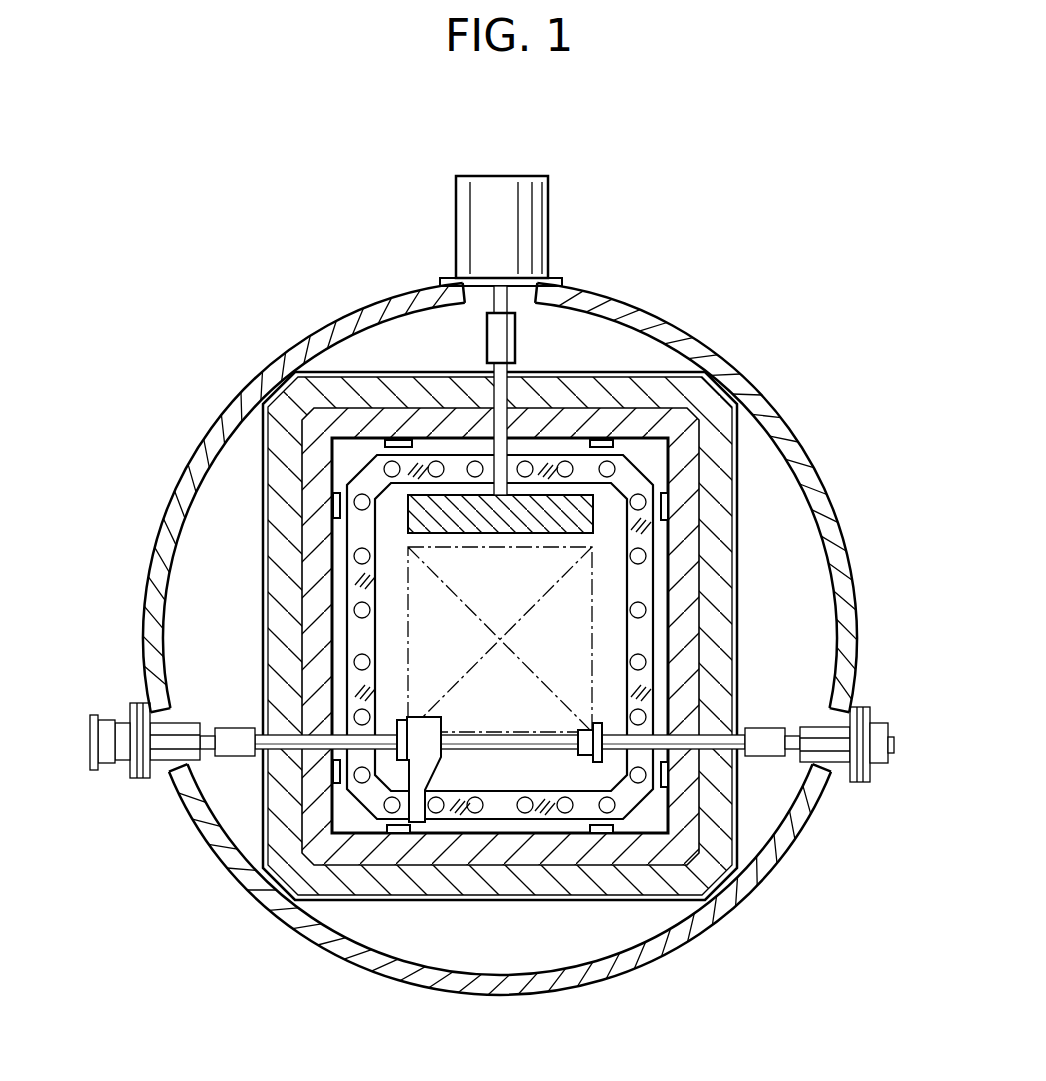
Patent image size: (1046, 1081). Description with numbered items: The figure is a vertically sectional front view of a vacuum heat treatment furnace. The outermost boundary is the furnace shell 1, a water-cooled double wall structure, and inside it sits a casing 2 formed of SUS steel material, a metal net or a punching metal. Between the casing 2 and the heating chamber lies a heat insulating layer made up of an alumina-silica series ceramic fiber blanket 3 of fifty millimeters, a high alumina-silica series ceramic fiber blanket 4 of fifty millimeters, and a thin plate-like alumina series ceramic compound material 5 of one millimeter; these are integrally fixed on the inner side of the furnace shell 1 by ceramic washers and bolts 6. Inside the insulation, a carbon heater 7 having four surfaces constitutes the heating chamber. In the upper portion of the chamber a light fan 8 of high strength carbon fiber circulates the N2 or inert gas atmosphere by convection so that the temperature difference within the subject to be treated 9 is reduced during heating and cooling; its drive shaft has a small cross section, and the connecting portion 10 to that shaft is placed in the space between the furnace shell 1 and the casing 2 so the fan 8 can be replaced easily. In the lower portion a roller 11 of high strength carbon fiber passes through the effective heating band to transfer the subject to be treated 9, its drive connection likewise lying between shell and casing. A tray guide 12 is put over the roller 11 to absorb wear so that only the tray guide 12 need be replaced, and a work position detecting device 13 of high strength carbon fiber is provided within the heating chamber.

The furnace shell 1 is at (800, 813).
The casing 2 is at (748, 872).
The alumina-silica series ceramic fiber blanket 3 is at (657, 882).
The high alumina-silica series ceramic fiber blanket 4 is at (550, 848).
The thin plate-like alumina series ceramic compound material 5 is at (487, 840).
The ceramic washers and bolts 6 is at (397, 833).
The carbon heater 7 is at (373, 790).
The light fan 8 is at (593, 497).
The subject to be treated 9 is at (577, 612).
The connecting portion 10 is at (515, 334).
The roller 11 is at (710, 737).
The tray guide 12 is at (600, 722).
The work position detecting device 13 is at (437, 720).